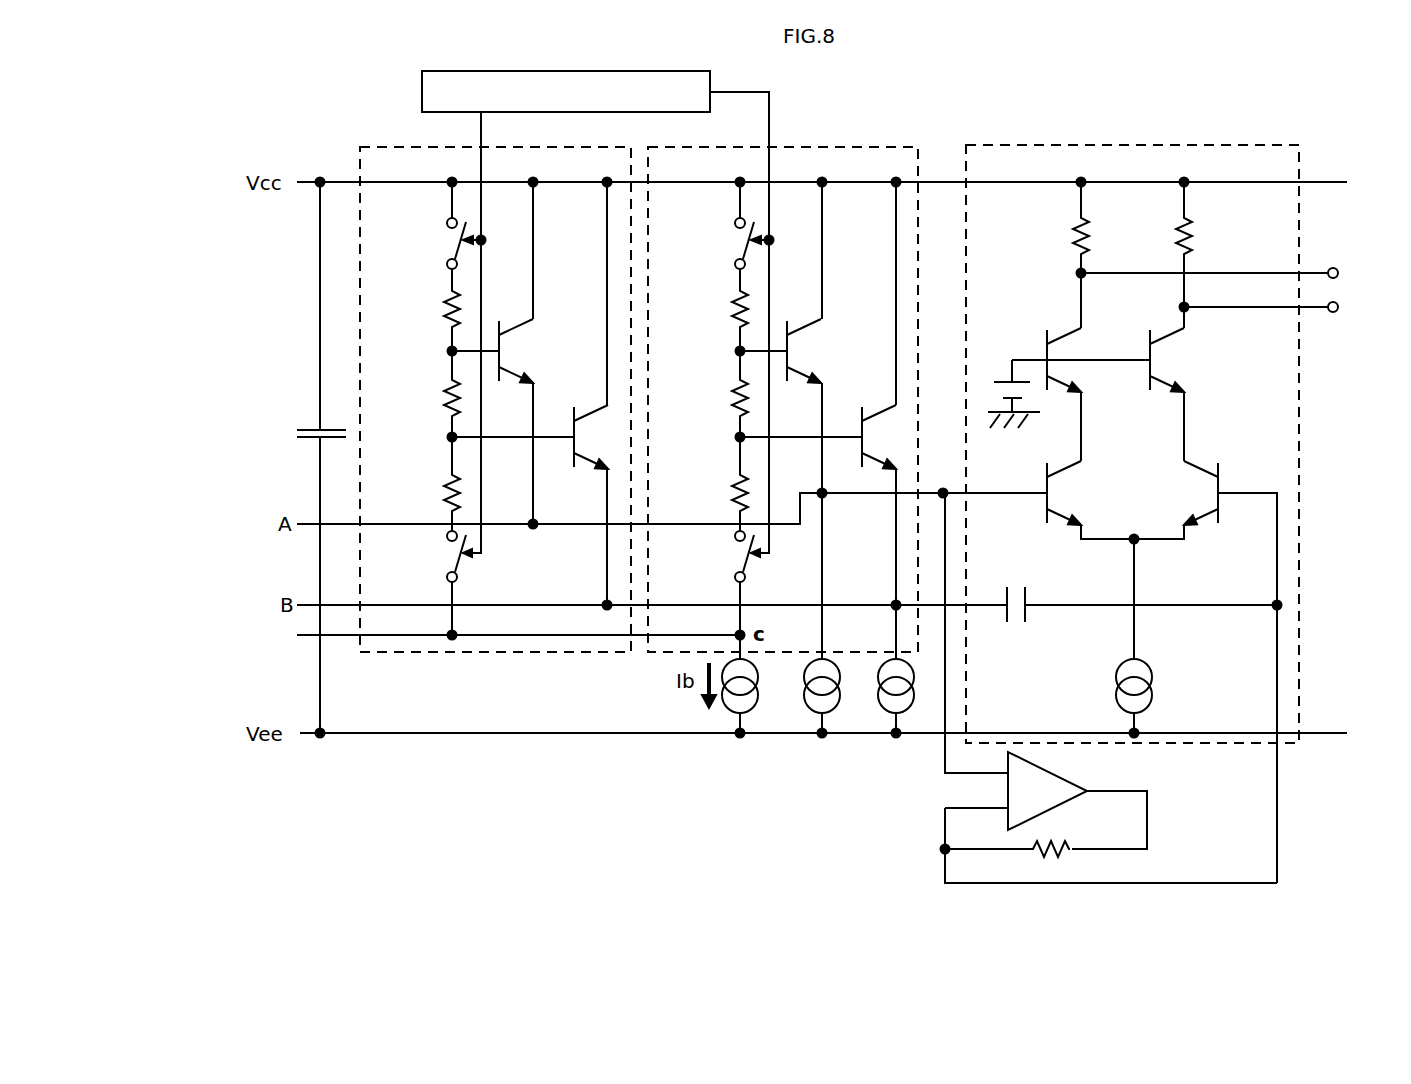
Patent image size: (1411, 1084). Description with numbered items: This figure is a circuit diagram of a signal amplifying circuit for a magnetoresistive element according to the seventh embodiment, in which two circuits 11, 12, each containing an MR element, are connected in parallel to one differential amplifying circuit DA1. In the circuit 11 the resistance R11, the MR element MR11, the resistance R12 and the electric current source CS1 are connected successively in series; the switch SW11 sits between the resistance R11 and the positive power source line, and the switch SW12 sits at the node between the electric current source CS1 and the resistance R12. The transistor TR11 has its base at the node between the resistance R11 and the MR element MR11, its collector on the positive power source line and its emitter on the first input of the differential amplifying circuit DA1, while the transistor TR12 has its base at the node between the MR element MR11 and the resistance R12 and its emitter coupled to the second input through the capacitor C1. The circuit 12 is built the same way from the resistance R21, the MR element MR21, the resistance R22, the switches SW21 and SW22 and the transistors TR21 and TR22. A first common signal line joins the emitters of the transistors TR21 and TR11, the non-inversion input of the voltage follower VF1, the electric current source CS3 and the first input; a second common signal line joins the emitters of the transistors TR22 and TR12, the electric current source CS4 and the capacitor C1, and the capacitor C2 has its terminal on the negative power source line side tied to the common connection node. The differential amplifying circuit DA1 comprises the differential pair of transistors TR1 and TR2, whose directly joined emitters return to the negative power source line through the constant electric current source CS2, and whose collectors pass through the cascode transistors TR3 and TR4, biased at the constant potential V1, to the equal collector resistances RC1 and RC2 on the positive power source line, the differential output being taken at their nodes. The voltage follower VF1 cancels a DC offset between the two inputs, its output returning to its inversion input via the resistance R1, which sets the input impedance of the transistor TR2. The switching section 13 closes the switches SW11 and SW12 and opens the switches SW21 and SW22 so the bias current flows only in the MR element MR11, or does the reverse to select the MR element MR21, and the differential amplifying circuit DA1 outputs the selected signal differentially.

The switching section 13 is at (422, 94).
The circuit 12 is at (601, 149).
The circuit 11 is at (890, 149).
The differential amplifying circuit DA1 is at (1180, 497).
The voltage follower VF1 is at (1085, 688).
The capacitor C1 is at (787, 621).
The capacitor C2 is at (304, 457).
The resistance R1 is at (1050, 862).
The electric current source CS1 is at (723, 694).
The constant electric current source CS2 is at (1112, 636).
The electric current source CS3 is at (804, 694).
The electric current source CS4 is at (878, 694).
The transistor TR1 is at (1090, 500).
The transistor TR2 is at (1205, 672).
The transistor TR3 is at (1078, 394).
The transistor TR4 is at (1173, 394).
The transistor TR11 is at (819, 457).
The transistor TR12 is at (866, 457).
The transistor TR21 is at (531, 353).
The transistor TR22 is at (578, 393).
The collector resistance RC1 is at (1050, 255).
The collector resistance RC2 is at (1208, 255).
The resistance R11 is at (717, 308).
The resistance R12 is at (717, 492).
The resistance R21 is at (429, 308).
The resistance R22 is at (429, 492).
The MR element MR11 is at (703, 397).
The MR element MR21 is at (415, 397).
The switch SW11 is at (708, 243).
The switch SW12 is at (708, 556).
The switch SW21 is at (420, 243).
The switch SW22 is at (420, 556).
The constant potential V1 is at (1014, 379).